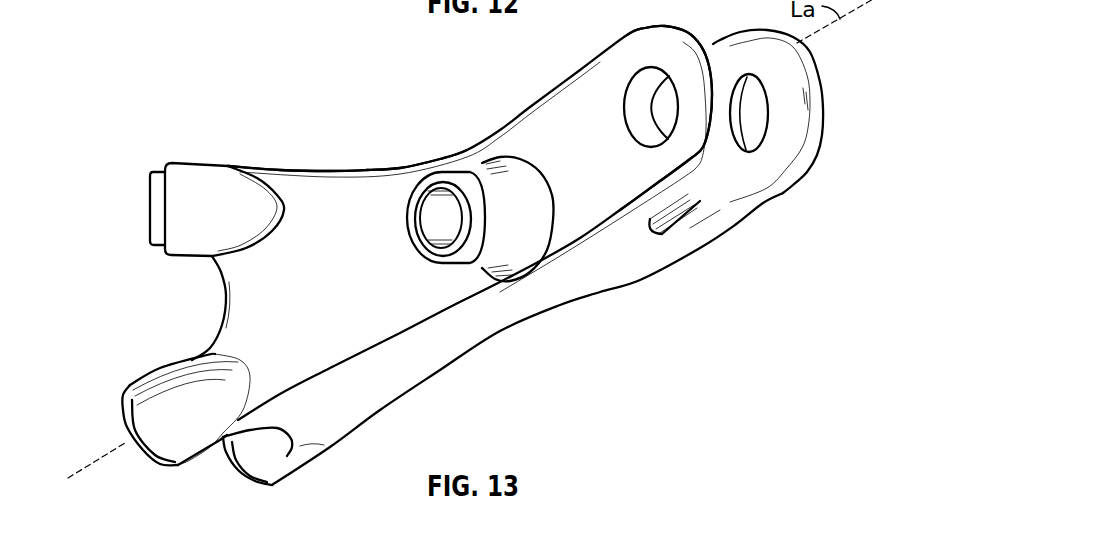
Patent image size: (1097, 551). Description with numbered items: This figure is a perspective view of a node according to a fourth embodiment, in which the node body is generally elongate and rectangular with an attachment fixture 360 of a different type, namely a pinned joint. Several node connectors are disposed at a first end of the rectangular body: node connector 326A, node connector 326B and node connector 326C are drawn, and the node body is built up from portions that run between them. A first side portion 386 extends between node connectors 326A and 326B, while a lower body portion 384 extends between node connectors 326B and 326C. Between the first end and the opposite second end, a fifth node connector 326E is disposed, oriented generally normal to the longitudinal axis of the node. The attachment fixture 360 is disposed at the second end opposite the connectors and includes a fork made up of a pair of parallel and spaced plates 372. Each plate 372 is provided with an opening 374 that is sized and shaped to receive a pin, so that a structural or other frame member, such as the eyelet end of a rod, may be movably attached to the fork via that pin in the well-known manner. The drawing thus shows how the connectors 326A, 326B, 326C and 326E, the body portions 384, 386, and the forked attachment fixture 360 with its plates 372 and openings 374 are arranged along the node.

The node connector 326A is at (217, 174).
The node connector 326B is at (165, 372).
The node connector 326C is at (263, 480).
The fifth node connector 326E is at (476, 178).
The first side portion 386 is at (318, 198).
The lower body portion 384 is at (420, 366).
The plate 372 is at (787, 184).
The opening 374 is at (753, 98).
The attachment fixture 360 is at (783, 207).